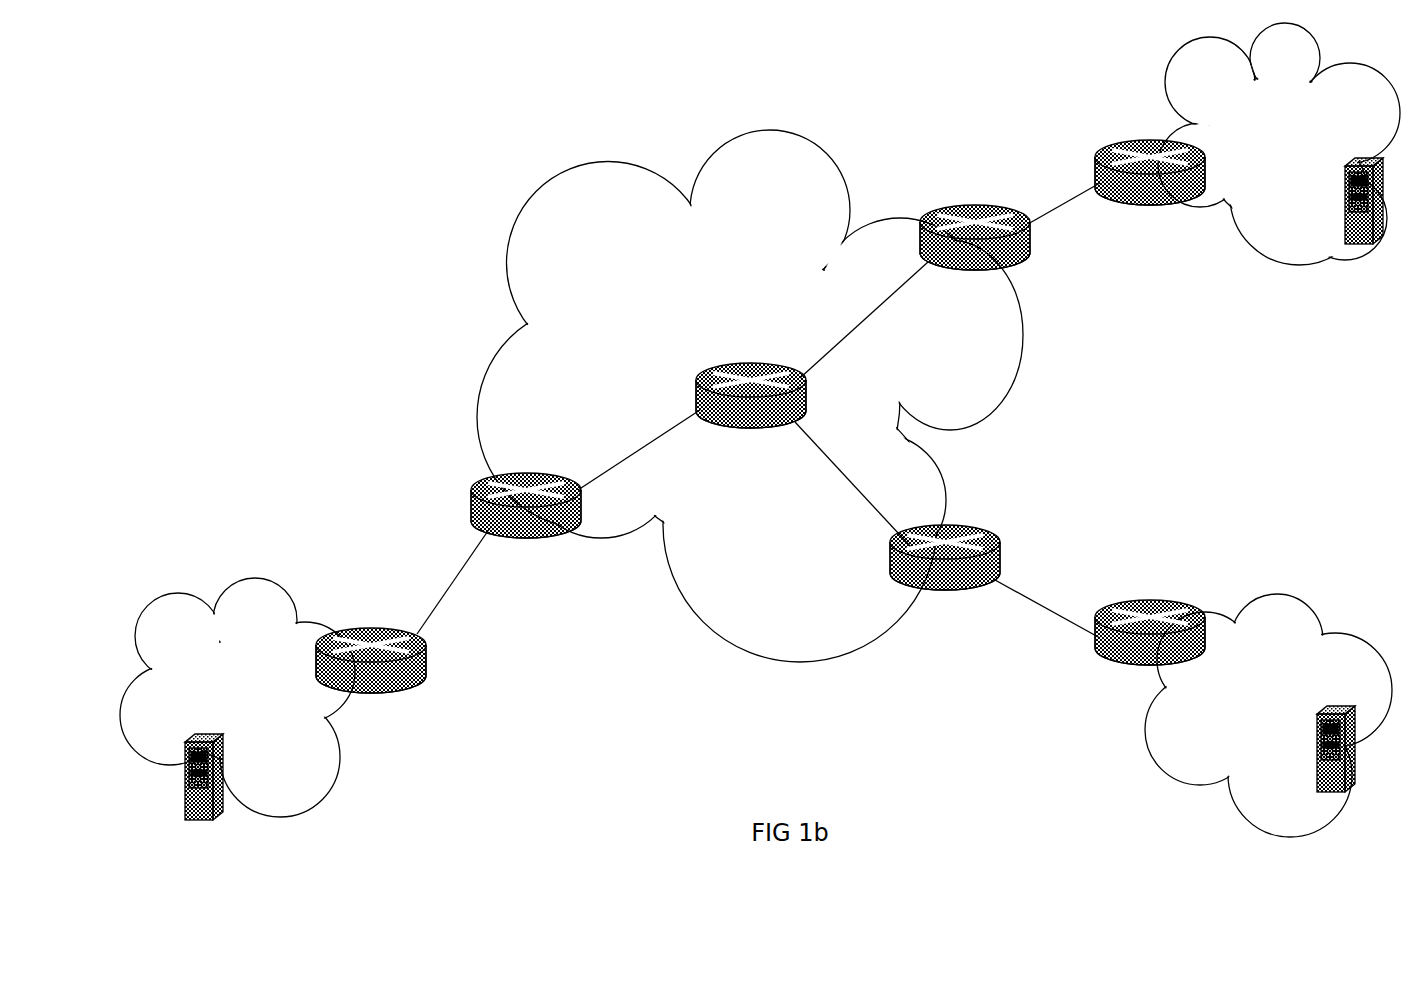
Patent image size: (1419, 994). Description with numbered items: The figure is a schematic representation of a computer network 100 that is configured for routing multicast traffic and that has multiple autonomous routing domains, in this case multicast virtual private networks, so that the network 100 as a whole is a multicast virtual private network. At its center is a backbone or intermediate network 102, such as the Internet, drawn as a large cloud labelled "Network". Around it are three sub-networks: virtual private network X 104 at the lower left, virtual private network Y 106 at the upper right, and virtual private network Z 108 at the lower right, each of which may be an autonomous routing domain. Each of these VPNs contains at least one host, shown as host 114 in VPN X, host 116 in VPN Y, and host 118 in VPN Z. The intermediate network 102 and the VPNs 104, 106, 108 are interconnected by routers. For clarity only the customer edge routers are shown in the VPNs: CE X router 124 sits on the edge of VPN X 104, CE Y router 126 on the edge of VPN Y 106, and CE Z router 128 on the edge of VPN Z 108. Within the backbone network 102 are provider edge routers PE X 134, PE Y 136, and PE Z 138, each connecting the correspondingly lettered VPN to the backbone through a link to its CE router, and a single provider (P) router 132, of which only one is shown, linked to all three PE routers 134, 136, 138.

The computer network 100 is at (519, 98).
The intermediate network 102 is at (764, 128).
The virtual private network X 104 is at (262, 580).
The virtual private network Y 106 is at (1318, 265).
The virtual private network Z 108 is at (1262, 593).
The host 114 is at (183, 775).
The host 116 is at (1368, 247).
The host 118 is at (1355, 760).
The CE router 124 is at (427, 672).
The CE router 126 is at (1095, 175).
The CE router 128 is at (1137, 600).
The provider router 132 is at (695, 400).
The PE router 134 is at (470, 502).
The PE router 136 is at (1030, 240).
The PE router 138 is at (998, 560).